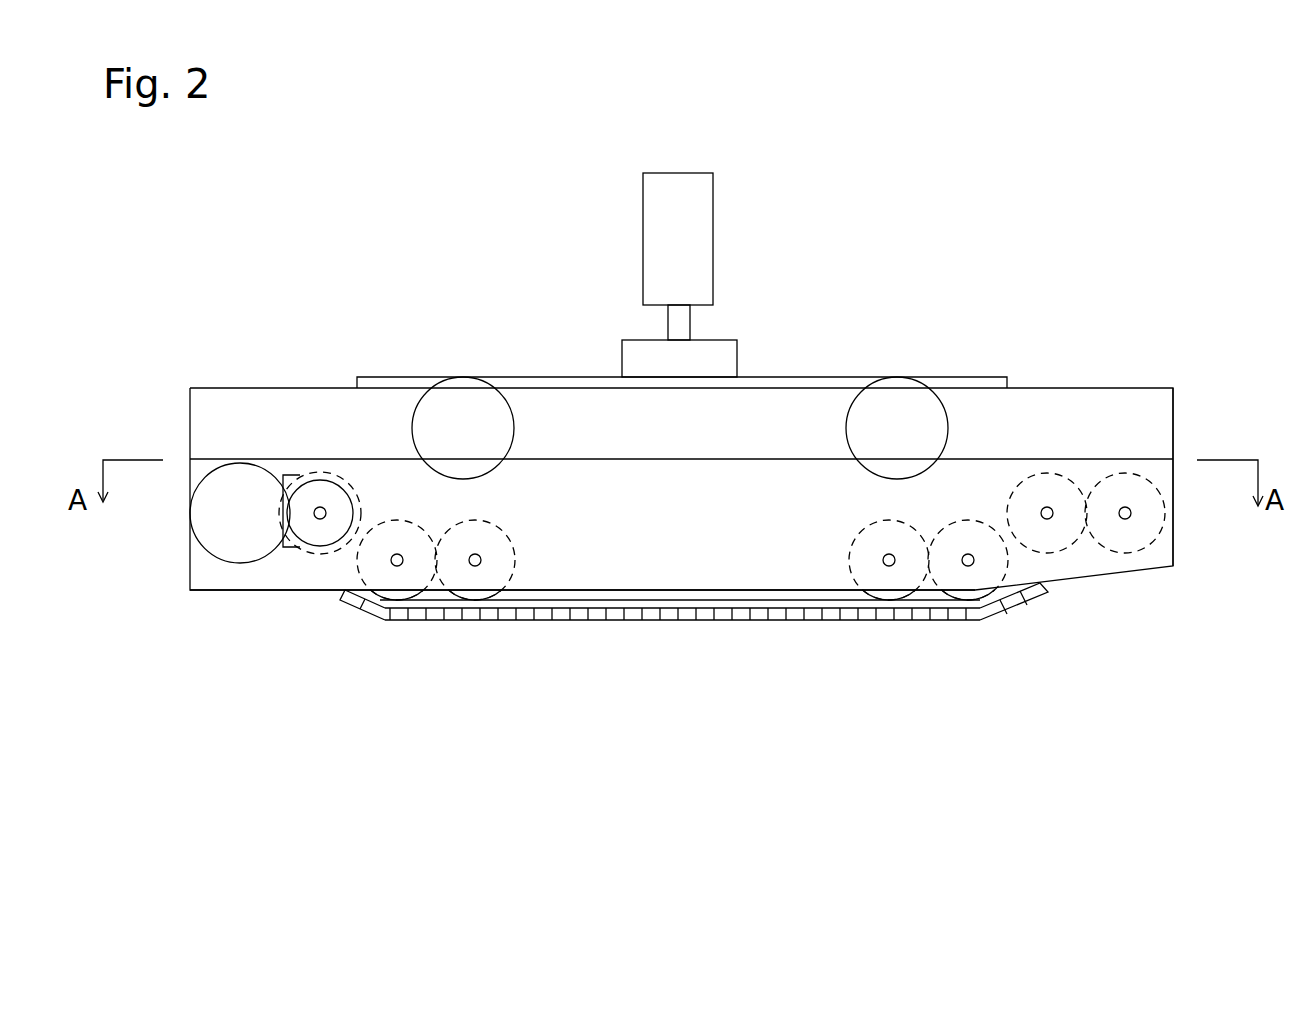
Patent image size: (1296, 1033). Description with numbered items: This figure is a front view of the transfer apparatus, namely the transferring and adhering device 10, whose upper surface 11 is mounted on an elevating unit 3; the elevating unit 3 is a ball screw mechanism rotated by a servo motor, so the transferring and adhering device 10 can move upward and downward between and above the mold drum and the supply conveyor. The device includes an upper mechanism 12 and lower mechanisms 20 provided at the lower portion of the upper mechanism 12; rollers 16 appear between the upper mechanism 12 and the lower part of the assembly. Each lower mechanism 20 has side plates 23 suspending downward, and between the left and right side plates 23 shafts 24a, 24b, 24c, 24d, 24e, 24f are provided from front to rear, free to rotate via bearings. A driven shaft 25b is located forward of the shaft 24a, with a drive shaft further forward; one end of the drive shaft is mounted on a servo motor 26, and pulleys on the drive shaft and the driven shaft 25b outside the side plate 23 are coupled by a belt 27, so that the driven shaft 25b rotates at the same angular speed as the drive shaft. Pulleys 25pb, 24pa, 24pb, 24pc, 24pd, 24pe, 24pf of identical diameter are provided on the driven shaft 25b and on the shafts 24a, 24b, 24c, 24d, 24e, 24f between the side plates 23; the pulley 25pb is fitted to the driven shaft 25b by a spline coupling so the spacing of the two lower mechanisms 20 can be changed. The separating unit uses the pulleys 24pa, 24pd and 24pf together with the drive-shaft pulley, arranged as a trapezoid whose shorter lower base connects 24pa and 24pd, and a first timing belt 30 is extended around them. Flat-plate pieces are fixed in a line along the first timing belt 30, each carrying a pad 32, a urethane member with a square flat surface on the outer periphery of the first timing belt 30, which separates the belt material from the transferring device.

The elevating unit 3 is at (700, 212).
The transferring and adhering device 10 is at (530, 348).
The upper surface 11 is at (776, 376).
The upper mechanism 12 is at (1083, 405).
The roller 16 is at (467, 398).
The lower mechanism 20 is at (205, 578).
The side plate 23 is at (240, 582).
The shaft 24a is at (397, 567).
The shaft 24b is at (477, 567).
The shaft 24c is at (891, 567).
The shaft 24d is at (970, 567).
The shaft 24e is at (1047, 520).
The shaft 24f is at (1127, 520).
The pulley 24pa is at (412, 575).
The pulley 24pb is at (518, 560).
The pulley 24pc is at (908, 575).
The pulley 24pd is at (985, 575).
The pulley 24pe is at (1068, 527).
The pulley 24pf is at (1140, 518).
The driven shaft 25b is at (315, 520).
The pulley 25pb is at (321, 520).
The servo motor 26 is at (210, 513).
The belt 27 is at (290, 475).
The first timing belt 30 is at (800, 610).
The pad 32 is at (712, 620).